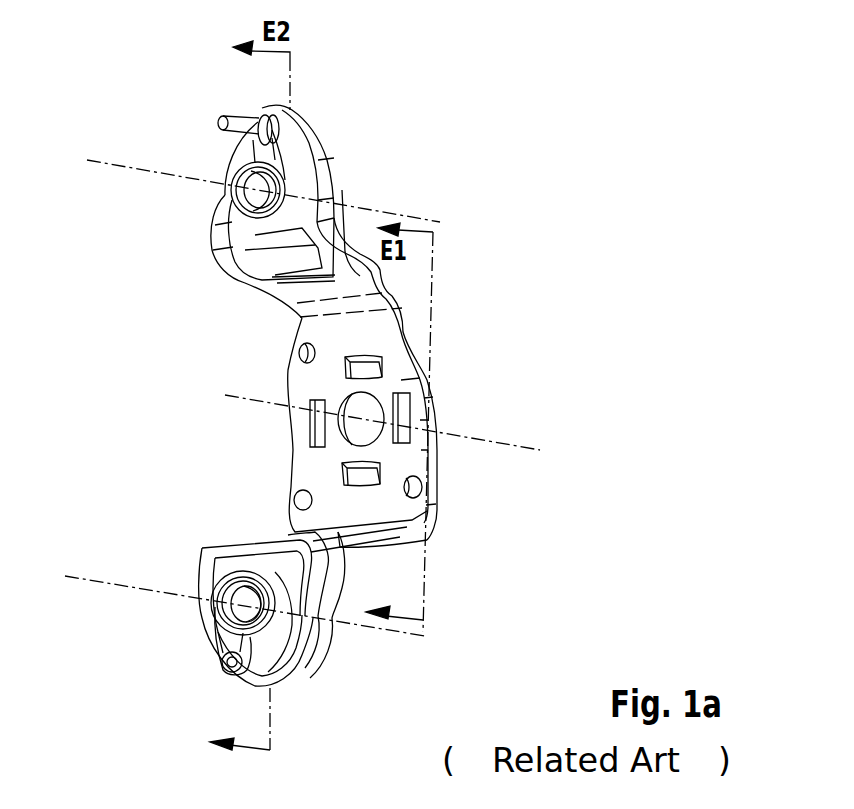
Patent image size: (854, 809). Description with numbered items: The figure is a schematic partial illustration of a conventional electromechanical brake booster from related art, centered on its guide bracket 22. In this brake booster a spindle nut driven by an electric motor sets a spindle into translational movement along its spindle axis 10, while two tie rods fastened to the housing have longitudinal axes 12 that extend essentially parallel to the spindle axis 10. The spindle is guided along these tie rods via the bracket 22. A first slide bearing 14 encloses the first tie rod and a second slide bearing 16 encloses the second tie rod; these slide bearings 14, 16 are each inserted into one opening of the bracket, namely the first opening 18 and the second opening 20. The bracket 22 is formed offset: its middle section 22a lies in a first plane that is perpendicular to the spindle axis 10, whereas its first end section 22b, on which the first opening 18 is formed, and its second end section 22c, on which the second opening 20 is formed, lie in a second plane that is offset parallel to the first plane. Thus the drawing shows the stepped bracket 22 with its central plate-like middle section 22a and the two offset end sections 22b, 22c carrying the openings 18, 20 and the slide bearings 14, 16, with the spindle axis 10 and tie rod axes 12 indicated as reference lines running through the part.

The spindle axis 10 is at (535, 442).
The longitudinal axes 12 is at (408, 217).
The first slide bearing 14 is at (243, 152).
The second slide bearing 16 is at (222, 633).
The first opening 18 is at (260, 245).
The second opening 20 is at (240, 558).
The bracket 22 is at (470, 277).
The middle section 22a is at (418, 437).
The first end section 22b is at (221, 226).
The second end section 22c is at (210, 575).